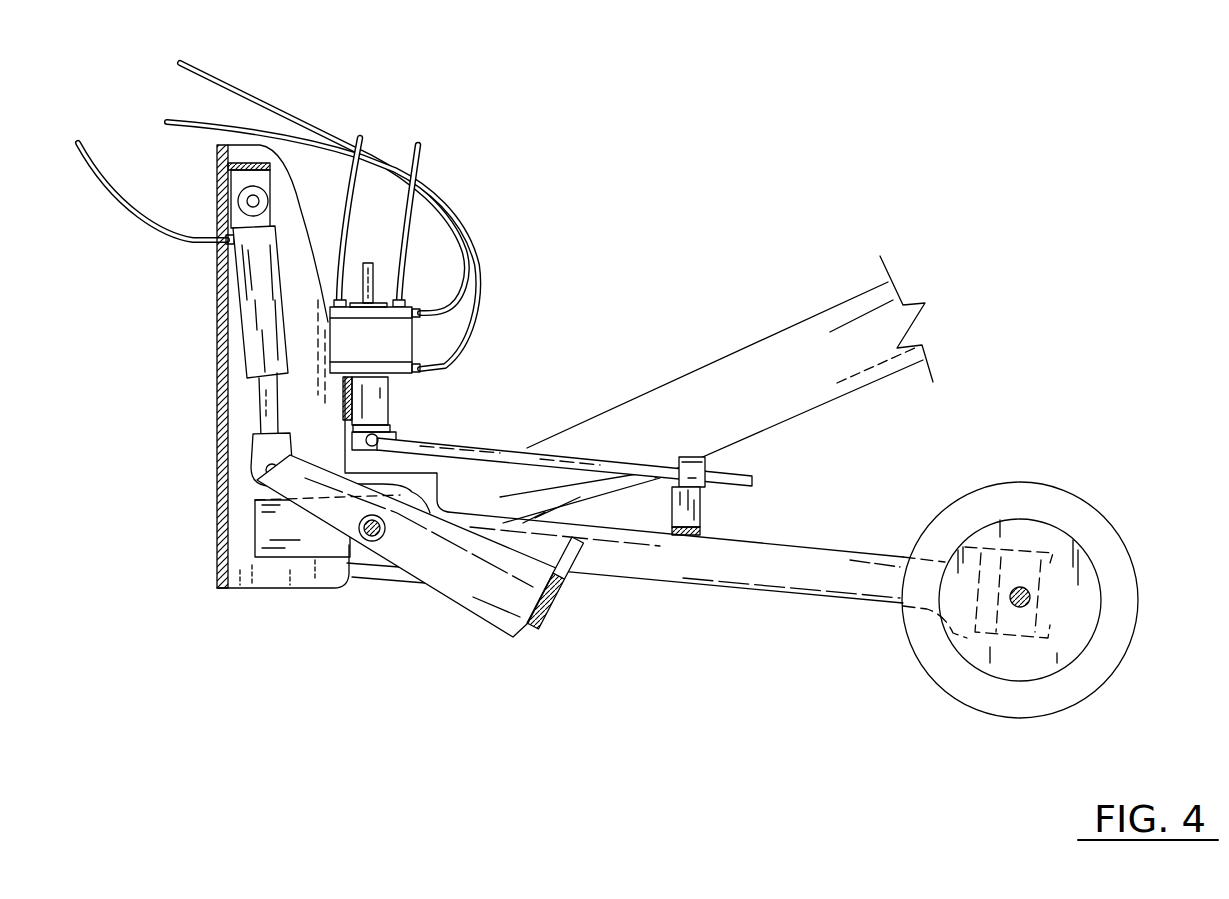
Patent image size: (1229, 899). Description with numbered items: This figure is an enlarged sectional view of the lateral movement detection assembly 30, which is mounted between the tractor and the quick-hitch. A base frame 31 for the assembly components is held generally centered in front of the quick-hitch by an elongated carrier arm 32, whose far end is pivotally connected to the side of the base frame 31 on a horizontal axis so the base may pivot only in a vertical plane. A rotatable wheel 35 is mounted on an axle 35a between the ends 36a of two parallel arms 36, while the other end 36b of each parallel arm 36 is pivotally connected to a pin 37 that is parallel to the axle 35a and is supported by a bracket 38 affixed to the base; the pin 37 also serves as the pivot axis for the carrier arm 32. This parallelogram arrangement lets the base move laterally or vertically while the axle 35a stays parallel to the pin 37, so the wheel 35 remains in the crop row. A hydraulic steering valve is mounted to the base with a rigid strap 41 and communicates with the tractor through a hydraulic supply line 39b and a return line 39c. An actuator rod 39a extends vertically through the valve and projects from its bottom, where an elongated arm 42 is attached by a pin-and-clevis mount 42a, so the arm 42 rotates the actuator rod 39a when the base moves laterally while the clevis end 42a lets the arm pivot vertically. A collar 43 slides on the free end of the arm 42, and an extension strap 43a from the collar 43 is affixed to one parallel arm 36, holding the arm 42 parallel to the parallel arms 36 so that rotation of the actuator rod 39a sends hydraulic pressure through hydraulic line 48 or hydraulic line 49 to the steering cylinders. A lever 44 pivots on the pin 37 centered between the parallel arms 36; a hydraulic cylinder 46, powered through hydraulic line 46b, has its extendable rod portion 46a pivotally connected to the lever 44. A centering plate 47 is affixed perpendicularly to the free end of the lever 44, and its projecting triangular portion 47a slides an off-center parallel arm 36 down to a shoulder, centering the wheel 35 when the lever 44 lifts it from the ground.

The lateral movement detection assembly 30 is at (590, 136).
The base frame 31 is at (214, 406).
The carrier arm 32 is at (777, 352).
The rotatable wheel 35 is at (1093, 525).
The axle 35a is at (1031, 598).
The parallel arm 36 is at (790, 570).
The end of parallel arm 36a is at (970, 560).
The other end of parallel arm 36b is at (398, 578).
The pin 37 is at (363, 538).
The bracket 38 is at (270, 525).
The actuator rod 39a is at (370, 428).
The hydraulic supply line 39b is at (480, 313).
The return line 39c is at (478, 250).
The rigid strap 41 is at (355, 386).
The elongated arm 42 is at (514, 448).
The pin-and-clevis mount 42a is at (390, 439).
The collar 43 is at (706, 463).
The extension strap 43a is at (700, 517).
The lever 44 is at (482, 608).
The hydraulic cylinder 46 is at (248, 349).
The extendable rod portion 46a is at (258, 429).
The hydraulic line 46b is at (143, 220).
The centering plate 47 is at (548, 605).
The triangular portion 47a is at (575, 552).
The hydraulic line 48 is at (424, 152).
The hydraulic line 49 is at (364, 140).